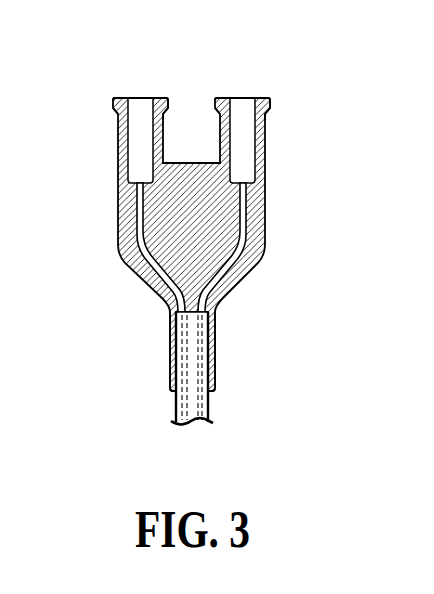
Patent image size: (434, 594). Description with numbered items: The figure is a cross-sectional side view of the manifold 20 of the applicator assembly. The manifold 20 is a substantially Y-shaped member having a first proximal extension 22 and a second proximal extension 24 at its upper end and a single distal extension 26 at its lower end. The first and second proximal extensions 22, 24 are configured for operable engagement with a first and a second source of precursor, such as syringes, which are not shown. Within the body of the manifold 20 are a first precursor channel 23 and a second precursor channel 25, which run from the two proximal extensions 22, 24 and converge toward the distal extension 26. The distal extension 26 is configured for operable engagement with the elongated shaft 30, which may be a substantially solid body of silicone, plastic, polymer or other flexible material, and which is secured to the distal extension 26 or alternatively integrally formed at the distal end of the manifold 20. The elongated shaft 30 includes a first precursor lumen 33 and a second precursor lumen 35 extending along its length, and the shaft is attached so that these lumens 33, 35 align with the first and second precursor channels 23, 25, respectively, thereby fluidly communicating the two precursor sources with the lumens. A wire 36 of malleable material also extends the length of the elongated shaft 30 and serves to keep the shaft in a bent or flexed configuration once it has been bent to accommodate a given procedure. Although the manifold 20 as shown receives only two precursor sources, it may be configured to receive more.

The manifold 20 is at (105, 180).
The first proximal extension 22 is at (117, 132).
The second proximal extension 24 is at (265, 137).
The first precursor channel 23 is at (137, 236).
The second precursor channel 25 is at (243, 245).
The distal extension 26 is at (215, 370).
The elongated shaft 30 is at (175, 393).
The first precursor lumen 33 is at (178, 408).
The second precursor lumen 35 is at (200, 407).
The wire 36 is at (198, 333).